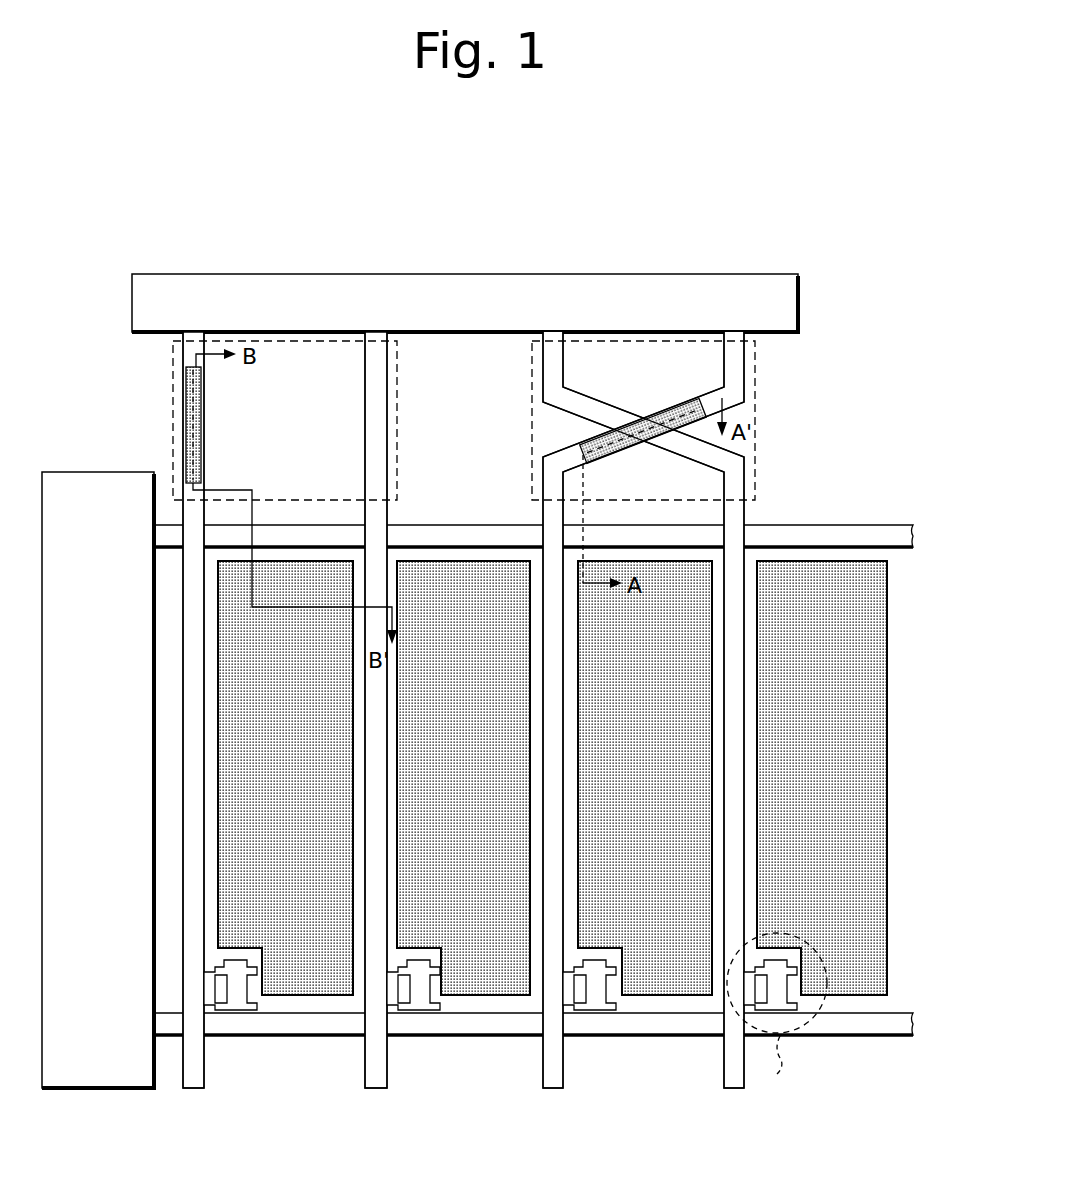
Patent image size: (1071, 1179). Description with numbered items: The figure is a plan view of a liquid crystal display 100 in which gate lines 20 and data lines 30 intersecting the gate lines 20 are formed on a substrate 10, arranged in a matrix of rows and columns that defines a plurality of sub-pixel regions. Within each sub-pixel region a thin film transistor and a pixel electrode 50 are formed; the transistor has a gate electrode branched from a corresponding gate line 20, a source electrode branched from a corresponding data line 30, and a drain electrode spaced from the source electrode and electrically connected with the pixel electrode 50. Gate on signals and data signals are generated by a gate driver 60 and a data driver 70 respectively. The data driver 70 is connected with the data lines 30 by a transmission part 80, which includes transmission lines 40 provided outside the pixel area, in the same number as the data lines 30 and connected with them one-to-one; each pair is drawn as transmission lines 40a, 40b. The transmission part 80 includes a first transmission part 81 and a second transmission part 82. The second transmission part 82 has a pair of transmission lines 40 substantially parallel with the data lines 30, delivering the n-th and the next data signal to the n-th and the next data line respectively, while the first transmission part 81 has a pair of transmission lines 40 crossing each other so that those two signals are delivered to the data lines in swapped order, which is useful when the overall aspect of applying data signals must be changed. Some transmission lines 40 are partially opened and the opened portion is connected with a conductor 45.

The liquid crystal display 100 is at (752, 176).
The substrate 10 is at (814, 1062).
The gate lines 20 is at (853, 535).
The data lines 30 is at (191, 1084).
The transmission lines 40 is at (228, 222).
The transmission line 40a is at (197, 330).
The transmission line 40b is at (379, 330).
The conductor 45 is at (204, 420).
The pixel electrodes 50 is at (272, 752).
The gate driver 60 is at (98, 1090).
The data driver 70 is at (800, 302).
The transmission part 80 is at (433, 436).
The first transmission part 81 is at (532, 422).
The second transmission part 82 is at (397, 422).